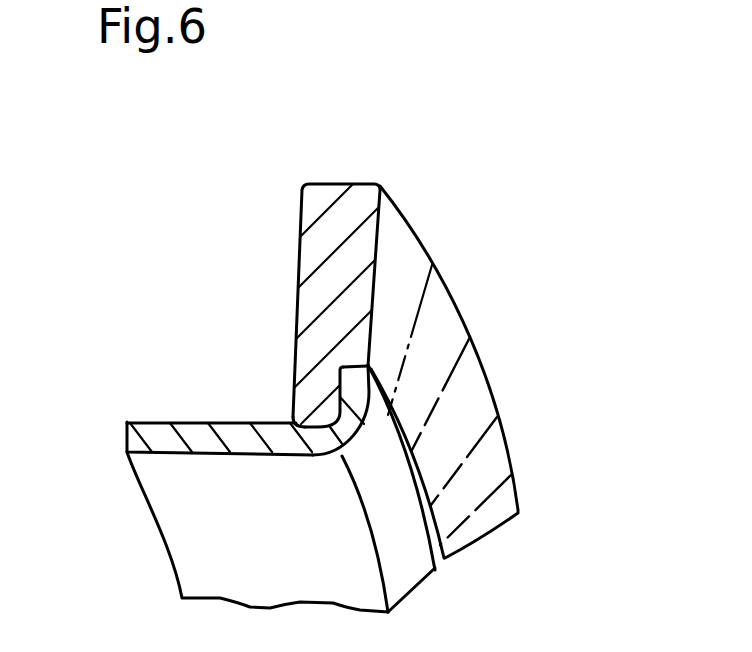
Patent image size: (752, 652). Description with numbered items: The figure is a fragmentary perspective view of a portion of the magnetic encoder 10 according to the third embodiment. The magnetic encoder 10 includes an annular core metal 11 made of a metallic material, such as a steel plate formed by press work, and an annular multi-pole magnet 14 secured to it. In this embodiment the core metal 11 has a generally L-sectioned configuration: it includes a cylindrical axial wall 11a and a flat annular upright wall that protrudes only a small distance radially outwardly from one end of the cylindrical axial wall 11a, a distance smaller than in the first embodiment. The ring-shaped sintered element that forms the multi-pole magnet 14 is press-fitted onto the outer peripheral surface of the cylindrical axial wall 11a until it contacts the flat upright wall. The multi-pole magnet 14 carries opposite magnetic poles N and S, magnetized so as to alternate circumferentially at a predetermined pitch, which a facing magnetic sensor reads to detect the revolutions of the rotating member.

The magnetic encoder 10 is at (262, 215).
The core metal 11 is at (113, 281).
The cylindrical axial wall 11a is at (207, 438).
The multi-pole magnet 14 is at (360, 253).
The magnetic pole N is at (435, 332).
The magnetic pole S is at (470, 390).